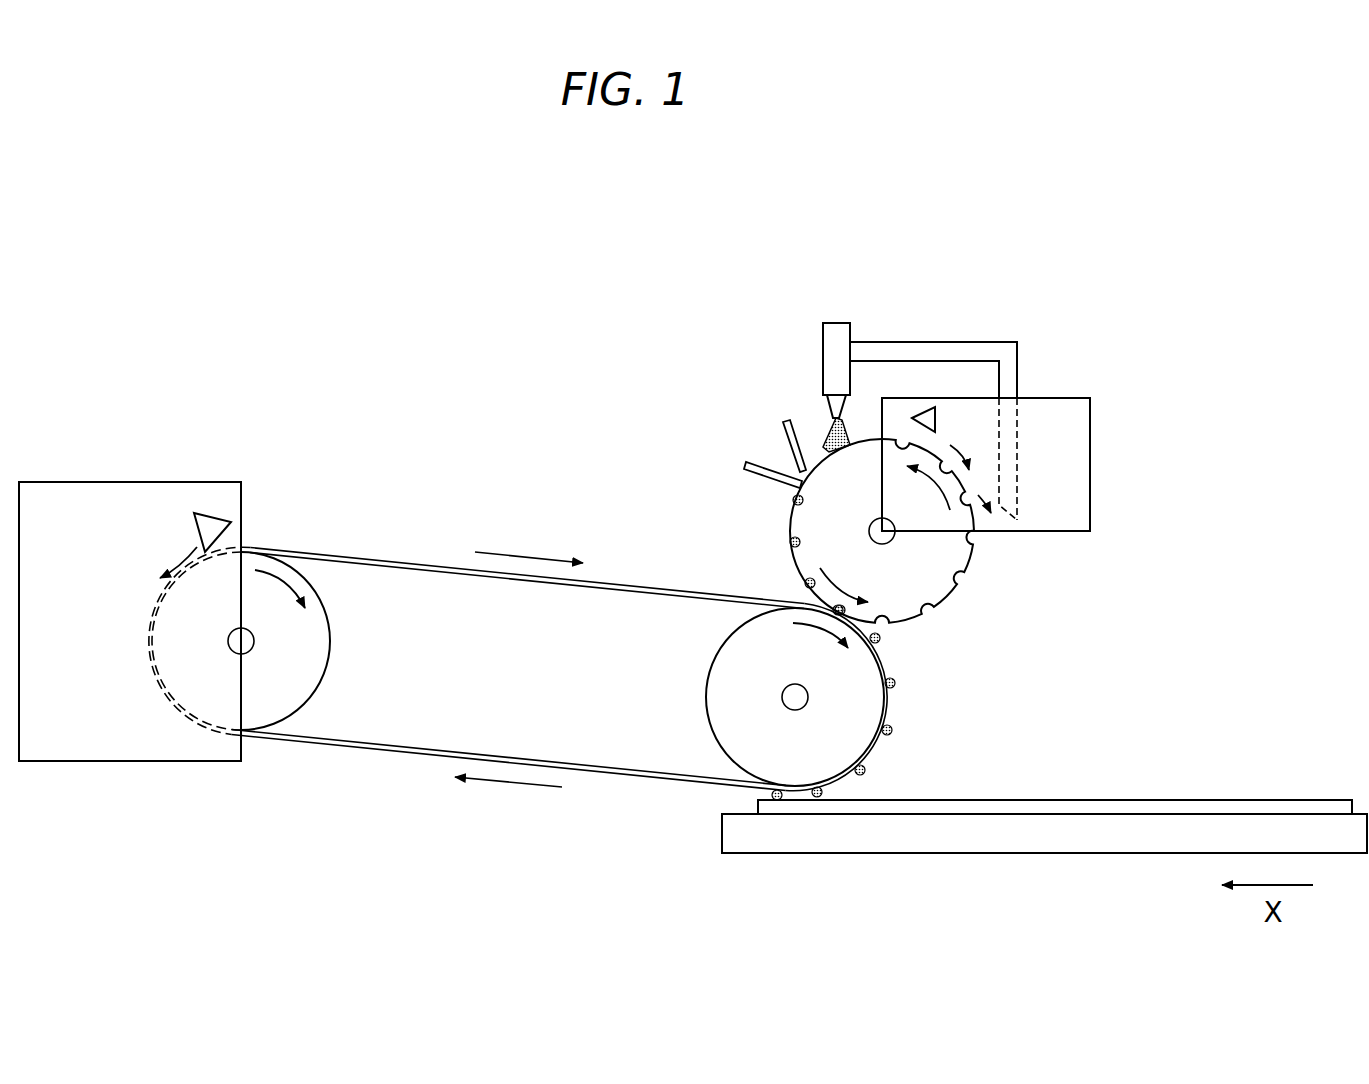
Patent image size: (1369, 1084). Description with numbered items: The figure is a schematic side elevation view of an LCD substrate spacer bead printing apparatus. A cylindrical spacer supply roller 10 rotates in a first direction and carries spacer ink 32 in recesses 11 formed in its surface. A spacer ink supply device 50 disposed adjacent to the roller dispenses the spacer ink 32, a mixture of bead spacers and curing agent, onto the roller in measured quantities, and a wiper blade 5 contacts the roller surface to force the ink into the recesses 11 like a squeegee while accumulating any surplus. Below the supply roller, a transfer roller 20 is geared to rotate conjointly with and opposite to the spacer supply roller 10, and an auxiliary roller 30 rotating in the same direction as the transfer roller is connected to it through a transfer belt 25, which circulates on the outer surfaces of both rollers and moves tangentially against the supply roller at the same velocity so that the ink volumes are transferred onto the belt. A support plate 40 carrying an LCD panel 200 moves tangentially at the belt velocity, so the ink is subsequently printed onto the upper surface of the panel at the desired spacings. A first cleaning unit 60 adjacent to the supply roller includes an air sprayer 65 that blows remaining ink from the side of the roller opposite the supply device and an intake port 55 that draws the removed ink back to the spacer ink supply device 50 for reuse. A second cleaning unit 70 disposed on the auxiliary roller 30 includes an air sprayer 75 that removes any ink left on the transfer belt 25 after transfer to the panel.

The wiper blade 5 is at (783, 430).
The spacer supply roller 10 is at (927, 587).
The recesses 11 is at (967, 535).
The transfer roller 20 is at (872, 705).
The transfer belt 25 is at (618, 582).
The auxiliary roller 30 is at (308, 667).
The spacer ink 32 is at (828, 430).
The support plate 40 is at (915, 855).
The spacer ink supply device 50 is at (837, 322).
The intake port 55 is at (935, 342).
The first cleaning unit 60 is at (1090, 463).
The air sprayer 65 is at (922, 407).
The second cleaning unit 70 is at (130, 481).
The air sprayer 75 is at (212, 512).
The LCD panel 200 is at (1103, 808).